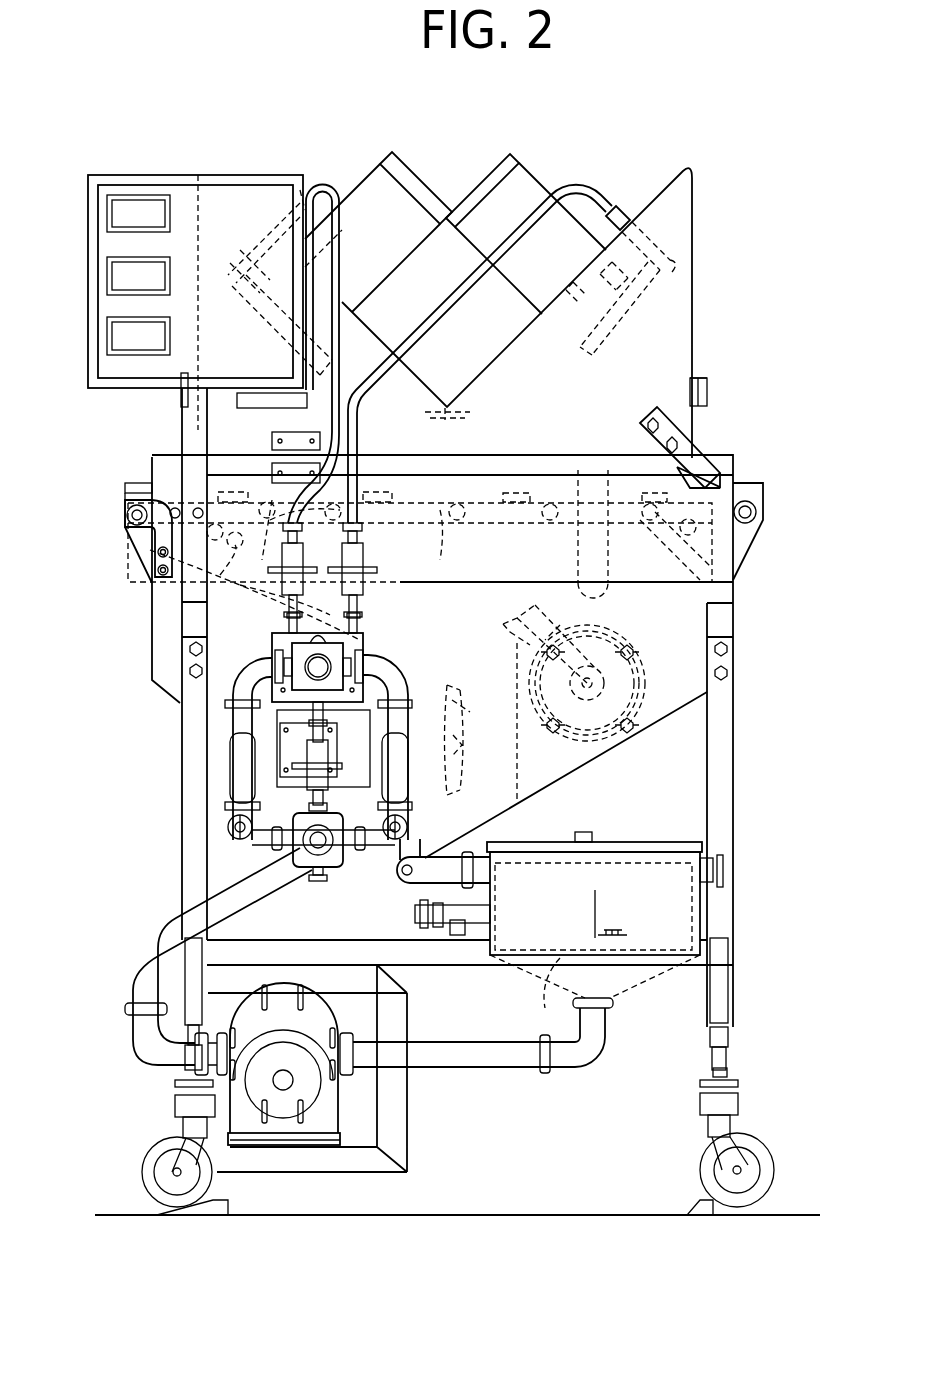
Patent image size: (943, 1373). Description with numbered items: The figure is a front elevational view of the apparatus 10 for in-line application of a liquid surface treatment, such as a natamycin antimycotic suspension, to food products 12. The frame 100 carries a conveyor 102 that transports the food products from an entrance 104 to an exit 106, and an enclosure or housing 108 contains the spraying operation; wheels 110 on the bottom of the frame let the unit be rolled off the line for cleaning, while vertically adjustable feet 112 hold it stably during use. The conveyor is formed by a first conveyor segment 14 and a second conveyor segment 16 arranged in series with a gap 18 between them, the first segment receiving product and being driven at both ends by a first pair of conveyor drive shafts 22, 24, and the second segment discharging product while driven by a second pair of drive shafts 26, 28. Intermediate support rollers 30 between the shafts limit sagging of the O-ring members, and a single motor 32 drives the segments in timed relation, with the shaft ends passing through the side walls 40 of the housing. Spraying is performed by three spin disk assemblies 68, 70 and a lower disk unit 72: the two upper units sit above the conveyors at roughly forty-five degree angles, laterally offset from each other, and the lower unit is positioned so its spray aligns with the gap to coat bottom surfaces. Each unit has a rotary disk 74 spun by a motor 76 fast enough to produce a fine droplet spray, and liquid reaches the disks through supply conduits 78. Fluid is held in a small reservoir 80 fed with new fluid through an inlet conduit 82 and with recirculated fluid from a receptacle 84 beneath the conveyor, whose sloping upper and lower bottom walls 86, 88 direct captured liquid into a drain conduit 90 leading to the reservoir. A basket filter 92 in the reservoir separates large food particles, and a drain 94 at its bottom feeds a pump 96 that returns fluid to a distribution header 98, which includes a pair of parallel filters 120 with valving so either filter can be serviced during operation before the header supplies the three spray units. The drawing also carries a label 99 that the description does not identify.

The apparatus 10 is at (748, 990).
The food products 12 is at (232, 500).
The first conveyor segment 14 is at (130, 498).
The second conveyor segment 16 is at (510, 580).
The gap 18 is at (505, 540).
The conveyor drive shaft 22 is at (125, 532).
The conveyor drive shaft 24 is at (420, 560).
The drive shaft 26 is at (450, 545).
The drive shaft 28 is at (720, 510).
The intermediate support rollers 30 is at (290, 535).
The motor 32 is at (650, 700).
The side walls 40 is at (368, 470).
The spin disk assembly 68 is at (413, 148).
The spin disk assembly 70 is at (478, 155).
The lower disk unit 72 is at (460, 732).
The rotary disk 74 is at (620, 372).
The motor 76 is at (362, 200).
The supply conduits 78 is at (608, 195).
The reservoir 80 is at (600, 842).
The inlet conduit 82 is at (724, 870).
The receptacle 84 is at (446, 825).
The upper bottom wall 86 is at (250, 598).
The lower bottom wall 88 is at (490, 850).
The drain conduit 90 is at (418, 905).
The basket filter 92 is at (540, 1015).
The drain 94 is at (588, 1050).
The pump 96 is at (395, 1098).
The distribution header 98 is at (272, 640).
The filter cylinders 99 is at (230, 777).
The frame 100 is at (735, 825).
The conveyor 102 is at (205, 495).
The entrance 104 is at (110, 478).
The exit 106 is at (768, 455).
The enclosure or housing 108 is at (562, 363).
The wheels 110 is at (213, 1170).
The vertically adjustable feet 112 is at (222, 1215).
The filters 120 is at (470, 412).